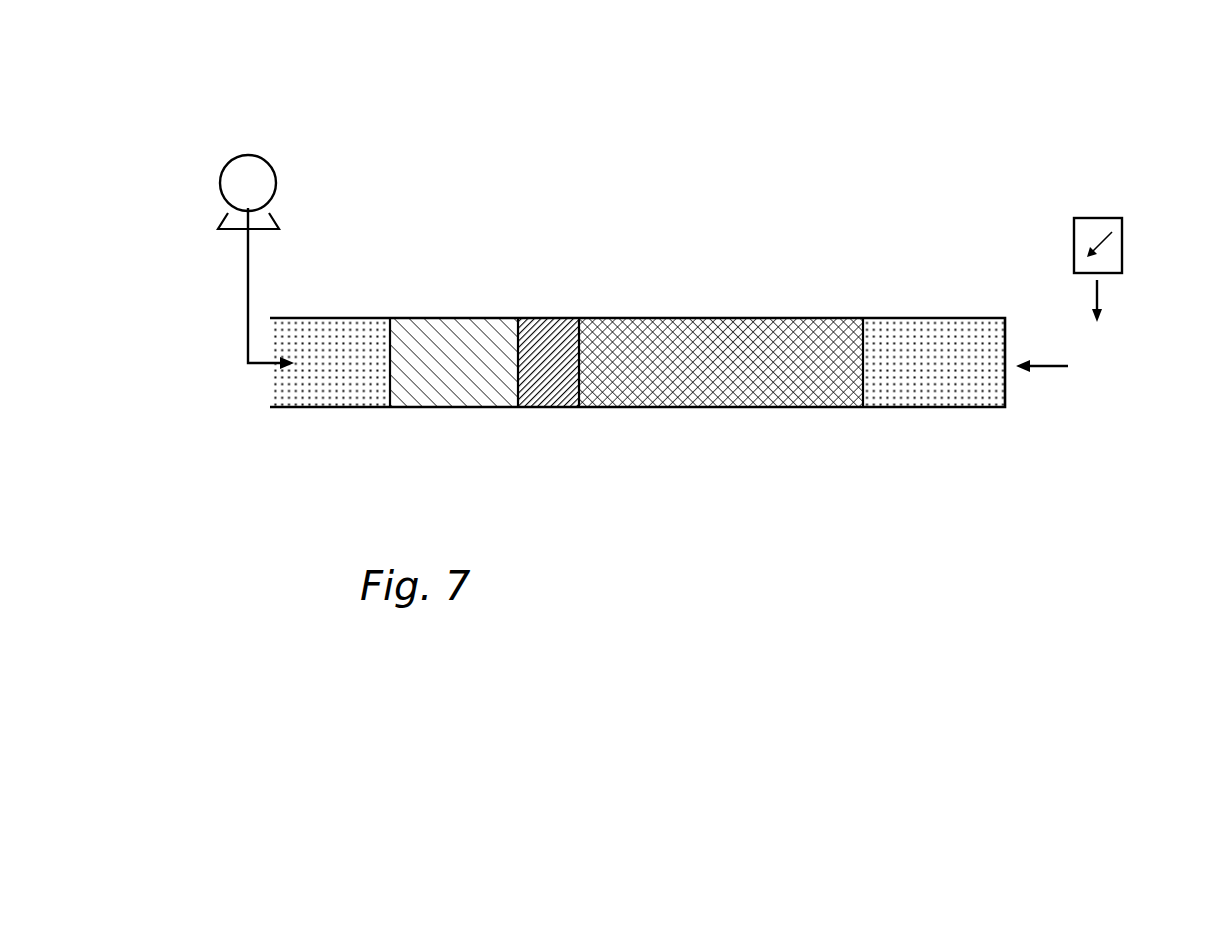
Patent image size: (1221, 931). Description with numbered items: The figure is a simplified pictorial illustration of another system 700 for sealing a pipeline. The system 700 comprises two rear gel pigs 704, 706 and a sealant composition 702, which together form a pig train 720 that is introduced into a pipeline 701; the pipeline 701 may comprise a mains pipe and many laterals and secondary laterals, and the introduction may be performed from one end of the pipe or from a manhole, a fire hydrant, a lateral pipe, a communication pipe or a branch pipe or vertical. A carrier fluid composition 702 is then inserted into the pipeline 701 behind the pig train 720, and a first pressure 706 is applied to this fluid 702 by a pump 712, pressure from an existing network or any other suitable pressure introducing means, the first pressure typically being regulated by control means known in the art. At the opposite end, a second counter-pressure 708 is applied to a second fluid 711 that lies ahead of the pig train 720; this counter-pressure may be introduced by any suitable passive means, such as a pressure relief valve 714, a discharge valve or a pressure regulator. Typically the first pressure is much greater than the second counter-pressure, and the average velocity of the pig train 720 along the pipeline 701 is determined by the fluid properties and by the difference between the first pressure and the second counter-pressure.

The system for sealing a pipeline 700 is at (1082, 86).
The pipeline 701 is at (925, 408).
The sealant composition 702 is at (335, 340).
The rear gel pig 704 is at (447, 340).
The rear gel pig 706 is at (537, 338).
The second counter-pressure P2 708 is at (1092, 383).
The second fluid 711 is at (943, 336).
The pump 712 is at (277, 180).
The pressure relief valve 714 is at (1122, 245).
The pig train 720 is at (733, 218).